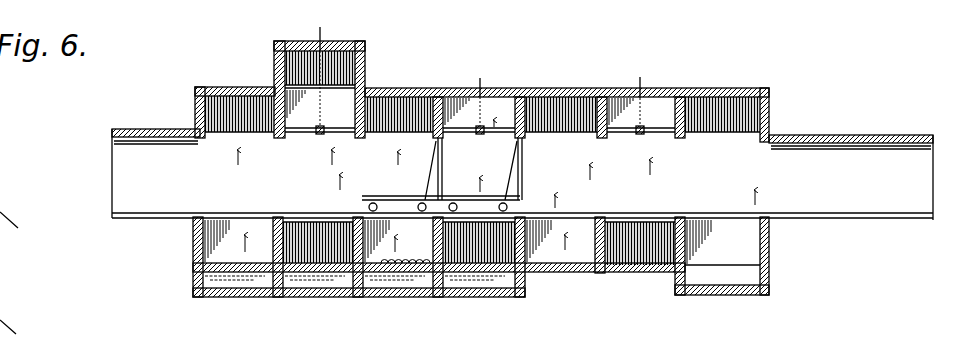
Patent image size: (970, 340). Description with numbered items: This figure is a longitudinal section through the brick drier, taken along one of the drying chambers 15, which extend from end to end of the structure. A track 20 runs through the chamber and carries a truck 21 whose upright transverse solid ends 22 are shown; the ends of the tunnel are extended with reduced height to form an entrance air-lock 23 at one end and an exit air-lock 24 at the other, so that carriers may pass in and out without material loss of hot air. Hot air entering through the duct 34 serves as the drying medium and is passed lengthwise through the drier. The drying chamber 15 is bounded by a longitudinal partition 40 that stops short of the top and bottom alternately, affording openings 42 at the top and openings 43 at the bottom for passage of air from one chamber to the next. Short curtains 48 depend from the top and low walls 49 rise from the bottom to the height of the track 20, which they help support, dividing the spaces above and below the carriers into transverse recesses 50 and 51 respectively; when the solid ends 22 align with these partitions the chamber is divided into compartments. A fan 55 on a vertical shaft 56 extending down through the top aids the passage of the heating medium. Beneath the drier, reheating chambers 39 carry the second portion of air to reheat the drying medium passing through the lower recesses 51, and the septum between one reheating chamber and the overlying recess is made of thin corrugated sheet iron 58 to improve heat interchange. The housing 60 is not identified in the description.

The drying chamber 15 is at (112, 157).
The track 20 is at (128, 213).
The truck 21 is at (383, 197).
The upright transverse solid end 22 is at (442, 150).
The entrance air-lock 23 is at (162, 128).
The exit air-lock 24 is at (861, 134).
The duct 34 is at (733, 276).
The reheating chamber 39 is at (305, 290).
The longitudinal partition 40 is at (240, 95).
The opening 42 is at (426, 88).
The opening 43 is at (293, 222).
The curtain 48 is at (279, 139).
The low wall 49 is at (700, 243).
The transverse recess 50 is at (494, 128).
The transverse recess 51 is at (226, 236).
The fan 55 is at (343, 134).
The vertical shaft 56 is at (322, 27).
The corrugated sheet iron septum 58 is at (385, 295).
The upper heating unit housing 60 is at (366, 51).